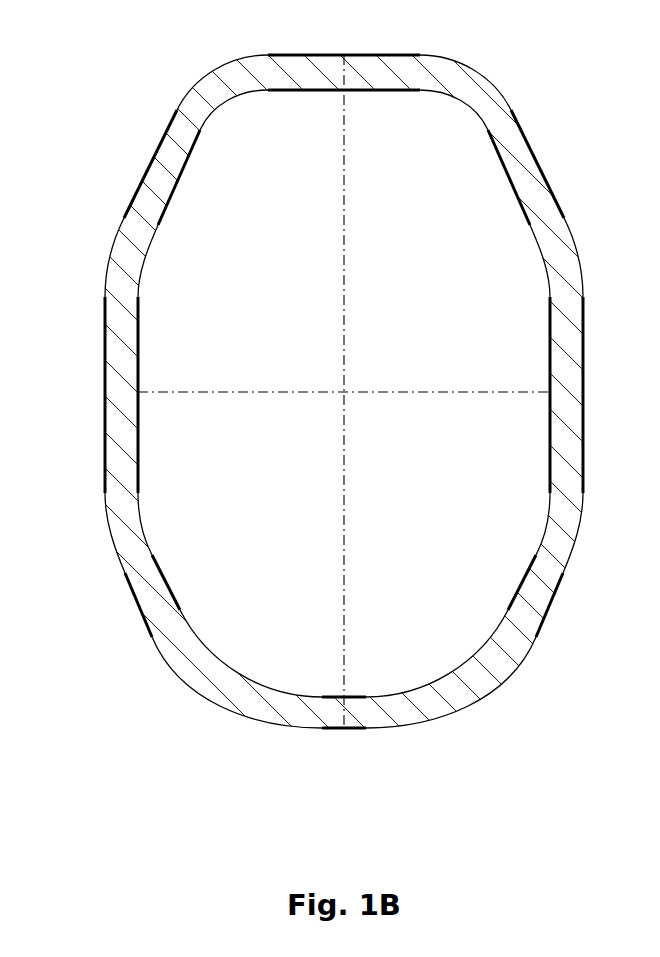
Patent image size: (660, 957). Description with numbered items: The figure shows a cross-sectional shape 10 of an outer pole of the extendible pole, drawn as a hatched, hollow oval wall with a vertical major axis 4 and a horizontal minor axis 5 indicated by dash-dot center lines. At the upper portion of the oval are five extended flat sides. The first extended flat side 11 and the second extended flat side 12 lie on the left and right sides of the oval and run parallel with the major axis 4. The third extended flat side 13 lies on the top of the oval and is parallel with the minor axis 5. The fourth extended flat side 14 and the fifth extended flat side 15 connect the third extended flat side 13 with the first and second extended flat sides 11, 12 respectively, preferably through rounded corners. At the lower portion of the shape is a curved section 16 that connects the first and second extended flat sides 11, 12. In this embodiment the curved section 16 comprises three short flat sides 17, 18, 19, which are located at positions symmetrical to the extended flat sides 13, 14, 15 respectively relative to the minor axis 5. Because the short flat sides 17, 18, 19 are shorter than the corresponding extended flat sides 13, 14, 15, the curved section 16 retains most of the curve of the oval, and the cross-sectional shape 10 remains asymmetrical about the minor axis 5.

The cross-sectional shape 10 is at (165, 108).
The major axis 4 is at (346, 260).
The minor axis 5 is at (425, 394).
The first extended flat side 11 is at (113, 402).
The second extended flat side 12 is at (565, 372).
The third extended flat side 13 is at (303, 74).
The fourth extended flat side 14 is at (162, 176).
The fifth extended flat side 15 is at (530, 177).
The curved section 16 is at (468, 680).
The first short flat side 17 is at (357, 710).
The second short flat side 18 is at (150, 598).
The third short flat side 19 is at (538, 596).